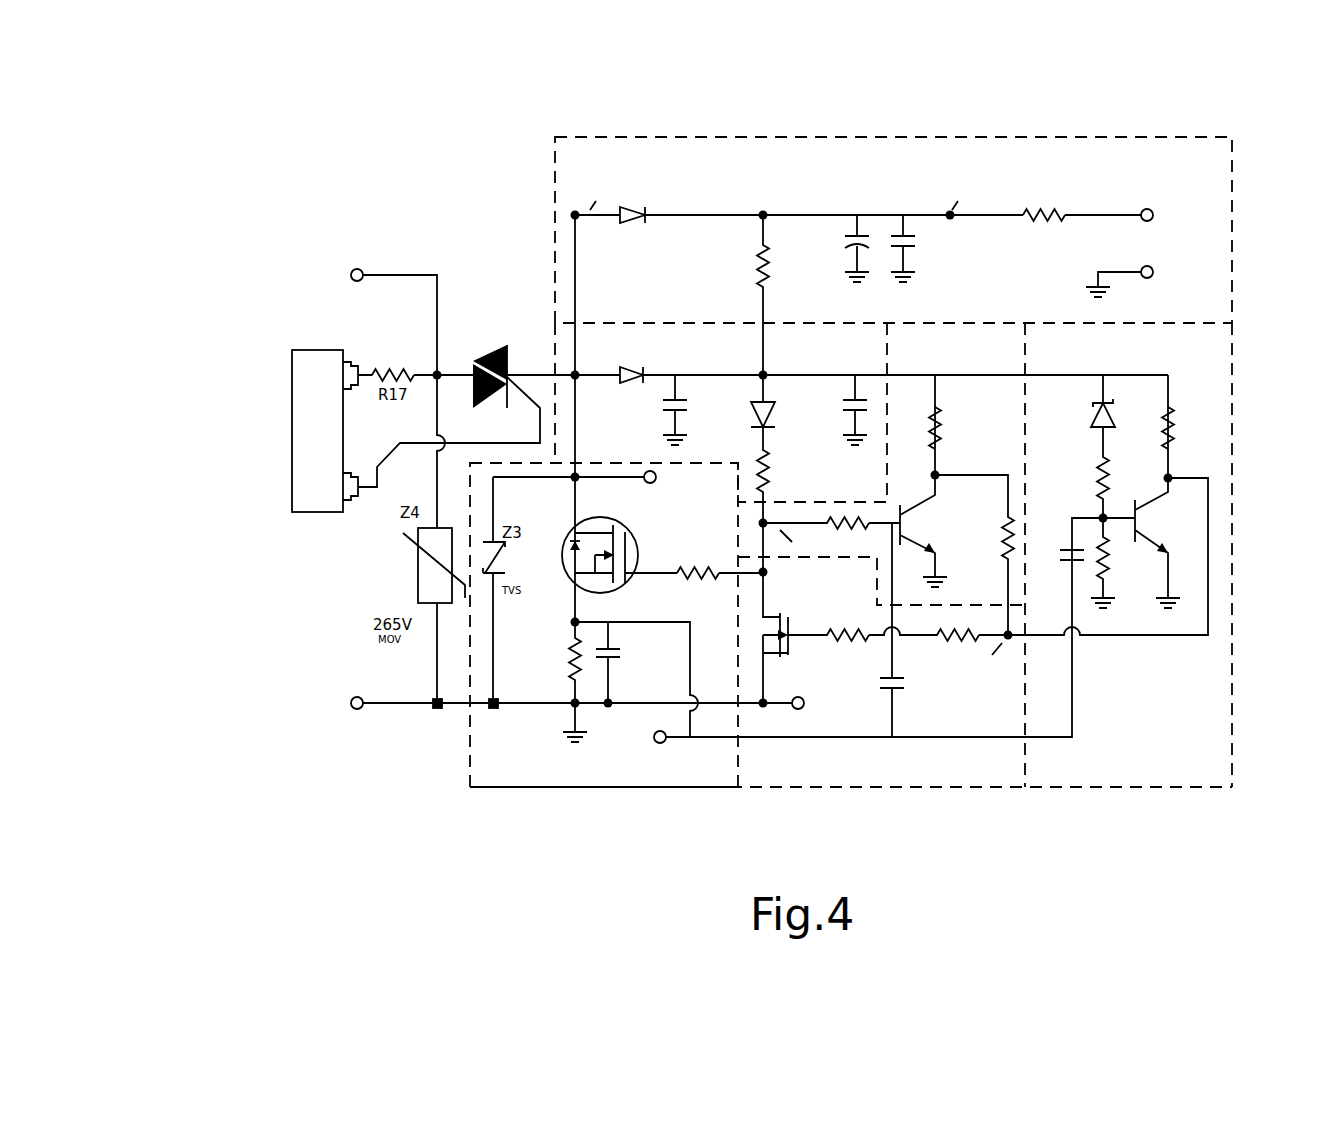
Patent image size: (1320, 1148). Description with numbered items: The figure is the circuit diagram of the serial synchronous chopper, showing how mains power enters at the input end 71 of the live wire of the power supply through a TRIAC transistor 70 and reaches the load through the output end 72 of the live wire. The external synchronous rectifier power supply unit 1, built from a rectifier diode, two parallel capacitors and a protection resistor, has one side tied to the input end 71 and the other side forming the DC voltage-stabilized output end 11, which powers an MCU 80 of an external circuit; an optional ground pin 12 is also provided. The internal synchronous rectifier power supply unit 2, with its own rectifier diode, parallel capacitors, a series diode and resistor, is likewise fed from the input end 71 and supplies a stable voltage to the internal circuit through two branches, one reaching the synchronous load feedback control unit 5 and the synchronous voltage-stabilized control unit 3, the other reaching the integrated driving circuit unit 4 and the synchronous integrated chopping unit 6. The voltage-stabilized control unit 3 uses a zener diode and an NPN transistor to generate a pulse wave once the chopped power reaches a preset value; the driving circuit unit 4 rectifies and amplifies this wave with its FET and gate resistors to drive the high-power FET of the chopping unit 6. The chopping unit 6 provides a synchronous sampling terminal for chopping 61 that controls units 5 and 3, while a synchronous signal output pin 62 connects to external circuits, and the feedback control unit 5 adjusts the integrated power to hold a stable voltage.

The external synchronous rectifier power supply unit 1 is at (921, 235).
The DC voltage-stabilized output end 11 is at (1152, 211).
The ground pin 12 is at (1153, 272).
The internal synchronous rectifier power supply unit 2 is at (555, 325).
The synchronous voltage-stabilized control unit 3 is at (1208, 663).
The integrated driving circuit unit 4 is at (851, 589).
The synchronous load feedback control unit 5 is at (1012, 588).
The synchronous integrated chopping unit 6 is at (490, 664).
The synchronous sampling terminal for chopping 61 is at (660, 745).
The synchronous signal output pin 62 is at (645, 480).
The TRIAC transistor 70 is at (473, 363).
The input end of a live wire of a power supply 71 is at (351, 272).
The output end of the live wire of the power supply 72 is at (351, 706).
The MCU 80 is at (298, 440).